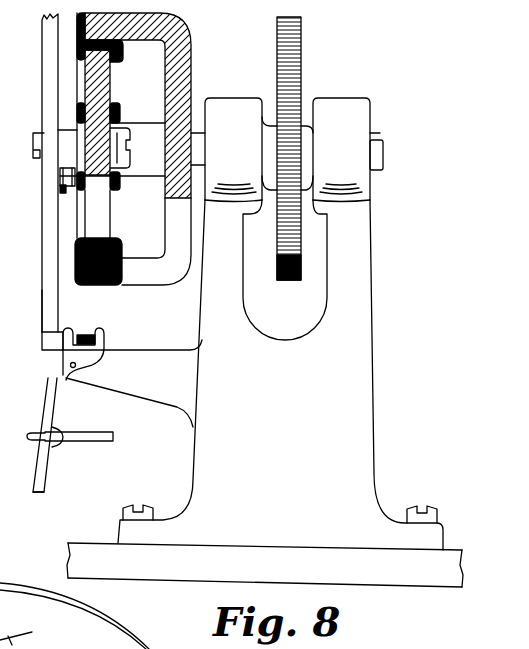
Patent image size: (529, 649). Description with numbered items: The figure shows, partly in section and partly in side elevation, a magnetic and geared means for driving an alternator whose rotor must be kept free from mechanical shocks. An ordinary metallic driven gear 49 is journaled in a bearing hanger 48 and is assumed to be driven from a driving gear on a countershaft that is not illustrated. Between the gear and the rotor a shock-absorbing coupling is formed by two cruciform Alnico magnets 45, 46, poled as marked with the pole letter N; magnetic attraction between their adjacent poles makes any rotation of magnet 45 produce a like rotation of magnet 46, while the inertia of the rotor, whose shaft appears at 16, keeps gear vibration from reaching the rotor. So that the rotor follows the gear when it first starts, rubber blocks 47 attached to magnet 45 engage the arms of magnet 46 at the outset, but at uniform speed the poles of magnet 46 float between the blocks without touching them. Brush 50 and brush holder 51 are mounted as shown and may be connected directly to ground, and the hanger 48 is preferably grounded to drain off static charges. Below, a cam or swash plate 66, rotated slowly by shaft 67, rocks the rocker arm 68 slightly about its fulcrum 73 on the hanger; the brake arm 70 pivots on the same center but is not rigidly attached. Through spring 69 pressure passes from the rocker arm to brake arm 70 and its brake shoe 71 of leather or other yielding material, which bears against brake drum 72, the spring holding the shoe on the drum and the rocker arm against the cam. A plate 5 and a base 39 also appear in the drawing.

The north pole marking N is at (77, 24).
The rubber blocks 47 is at (80, 40).
The plate 5 is at (104, 62).
The cruciform magnet 46 is at (104, 82).
The cruciform magnet 45 is at (192, 63).
The driven gear 49 is at (297, 70).
The rotor shaft 16 is at (42, 135).
The brush 50 is at (62, 175).
The brush holder 51 is at (62, 193).
The brake drum 72 is at (42, 308).
The brake shoe 71 is at (62, 337).
The fulcrum 73 is at (68, 368).
The spring 69 is at (82, 330).
The brake arm 70 is at (128, 358).
The rocker arm 68 is at (60, 390).
The cam 66 is at (95, 443).
The shaft 67 is at (45, 481).
The bearing hanger 48 is at (220, 445).
The base 39 is at (104, 548).